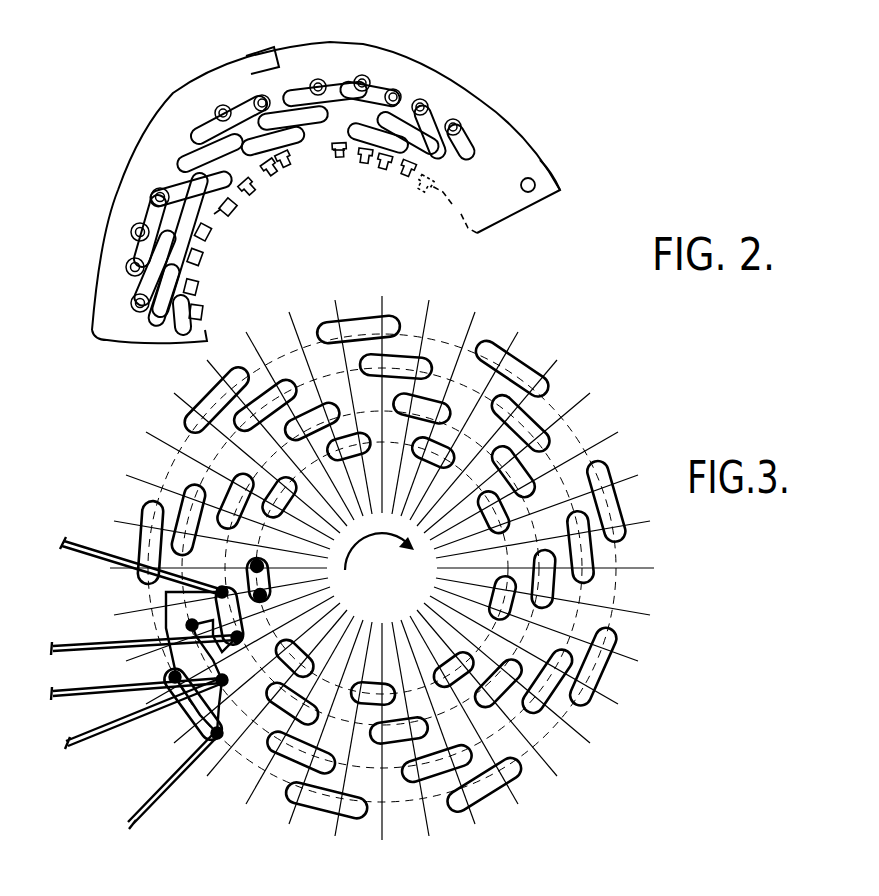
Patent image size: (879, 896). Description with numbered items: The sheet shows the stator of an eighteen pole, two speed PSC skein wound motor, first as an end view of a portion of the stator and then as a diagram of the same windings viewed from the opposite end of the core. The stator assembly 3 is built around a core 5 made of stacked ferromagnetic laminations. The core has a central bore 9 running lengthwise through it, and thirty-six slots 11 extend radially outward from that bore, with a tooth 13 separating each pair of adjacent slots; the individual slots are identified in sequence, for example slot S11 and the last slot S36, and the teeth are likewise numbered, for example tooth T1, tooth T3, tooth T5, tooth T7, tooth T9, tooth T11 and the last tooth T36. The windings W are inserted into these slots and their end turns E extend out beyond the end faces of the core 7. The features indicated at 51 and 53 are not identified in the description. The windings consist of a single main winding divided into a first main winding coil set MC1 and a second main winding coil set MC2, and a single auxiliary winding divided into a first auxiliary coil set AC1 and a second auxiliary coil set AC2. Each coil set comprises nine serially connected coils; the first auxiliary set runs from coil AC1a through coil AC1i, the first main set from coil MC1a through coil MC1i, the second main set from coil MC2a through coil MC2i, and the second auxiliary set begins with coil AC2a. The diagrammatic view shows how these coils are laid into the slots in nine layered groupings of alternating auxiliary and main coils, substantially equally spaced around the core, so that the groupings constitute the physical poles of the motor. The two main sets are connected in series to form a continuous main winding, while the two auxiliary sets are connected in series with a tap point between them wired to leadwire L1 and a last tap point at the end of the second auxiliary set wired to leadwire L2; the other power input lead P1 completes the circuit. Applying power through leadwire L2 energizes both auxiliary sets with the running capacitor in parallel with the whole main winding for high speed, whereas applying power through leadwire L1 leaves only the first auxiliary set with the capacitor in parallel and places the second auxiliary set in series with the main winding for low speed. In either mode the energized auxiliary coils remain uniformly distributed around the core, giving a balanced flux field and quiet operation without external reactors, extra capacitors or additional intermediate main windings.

In FIG. 2, the stator assembly 3 is at (523, 120).
In FIG. 2, the core 5 is at (547, 162).
In FIG. 2, the end face of core 7 is at (542, 192).
In FIG. 2, the slots 11 is at (219, 110).
In FIG. 2, the teeth 13 is at (337, 152).
In FIG. 2, the pole axis 51 is at (405, 83).
In FIG. 2, the pole axis 53 is at (318, 72).
In FIG. 2, the central bore 9 is at (221, 211).
In FIG. 2, the windings W is at (443, 109).
In FIG. 3, the windings W is at (179, 413).
In FIG. 2, the end turns E is at (440, 125).
In FIG. 2, the tooth T1 is at (340, 157).
In FIG. 2, the tooth T3 is at (303, 164).
In FIG. 2, the tooth T5 is at (277, 175).
In FIG. 2, the tooth T7 is at (251, 196).
In FIG. 2, the tooth T9 is at (218, 240).
In FIG. 2, the tooth T11 is at (217, 299).
In FIG. 2, the tooth T36 is at (373, 170).
In FIG. 2, the slot S11 is at (198, 272).
In FIG. 2, the slot S36 is at (397, 172).
In FIG. 3, the coil of first auxiliary coil set AC1a is at (343, 313).
In FIG. 3, the coil of first main winding coil set MC1a is at (399, 350).
In FIG. 3, the coil of second main winding coil set MC2a is at (433, 417).
In FIG. 3, the coil of second auxiliary coil set AC2a is at (480, 343).
In FIG. 3, the coil of first auxiliary coil set AC1i is at (527, 367).
In FIG. 3, the coil of first main winding coil set MC1i is at (540, 450).
In FIG. 3, the coil of second main winding coil set MC2i is at (632, 488).
In FIG. 3, the first auxiliary winding coil set AC1 is at (601, 688).
In FIG. 3, the second auxiliary winding coil set AC2 is at (477, 656).
In FIG. 3, the first main winding coil set MC1 is at (551, 692).
In FIG. 3, the second main winding coil set MC2 is at (506, 694).
In FIG. 3, the leadwire L1 is at (128, 567).
In FIG. 3, the leadwire L2 is at (138, 635).
In FIG. 3, the power input lead P1 is at (140, 753).